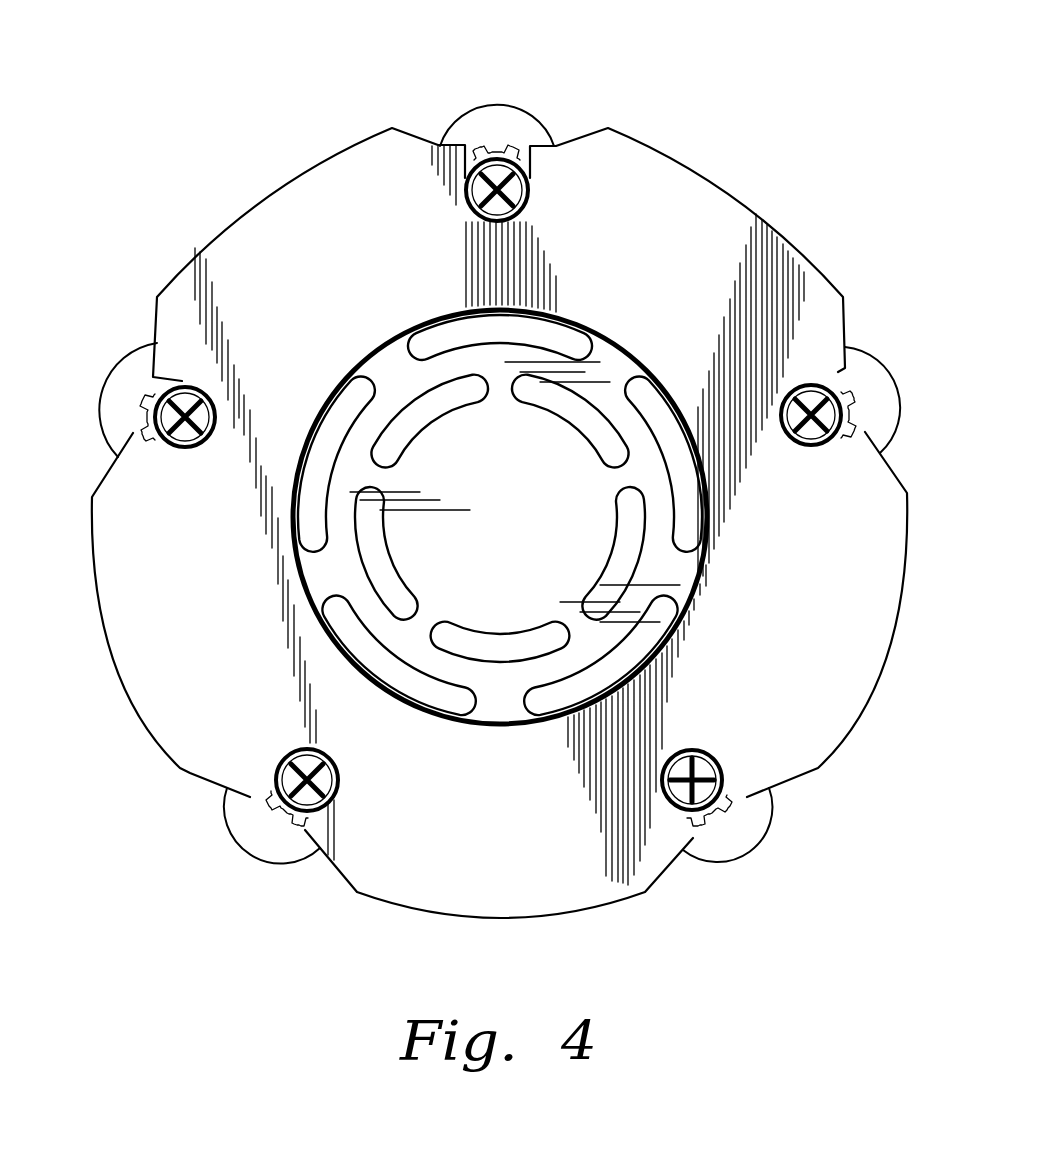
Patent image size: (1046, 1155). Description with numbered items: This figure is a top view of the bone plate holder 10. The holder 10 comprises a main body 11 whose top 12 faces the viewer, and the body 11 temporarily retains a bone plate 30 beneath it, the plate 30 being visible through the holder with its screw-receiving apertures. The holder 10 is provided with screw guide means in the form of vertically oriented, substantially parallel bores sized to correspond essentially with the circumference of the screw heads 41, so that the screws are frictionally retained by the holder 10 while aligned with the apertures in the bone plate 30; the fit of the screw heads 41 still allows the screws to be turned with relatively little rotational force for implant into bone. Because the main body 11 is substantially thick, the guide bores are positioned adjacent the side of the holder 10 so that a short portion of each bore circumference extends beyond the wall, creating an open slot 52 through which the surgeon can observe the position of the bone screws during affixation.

The bone plate holder 10 is at (768, 150).
The main body 11 is at (137, 707).
The top 12 is at (418, 850).
The bone plate 30 is at (555, 563).
The screw head 41 is at (722, 780).
The open slot 52 is at (690, 835).